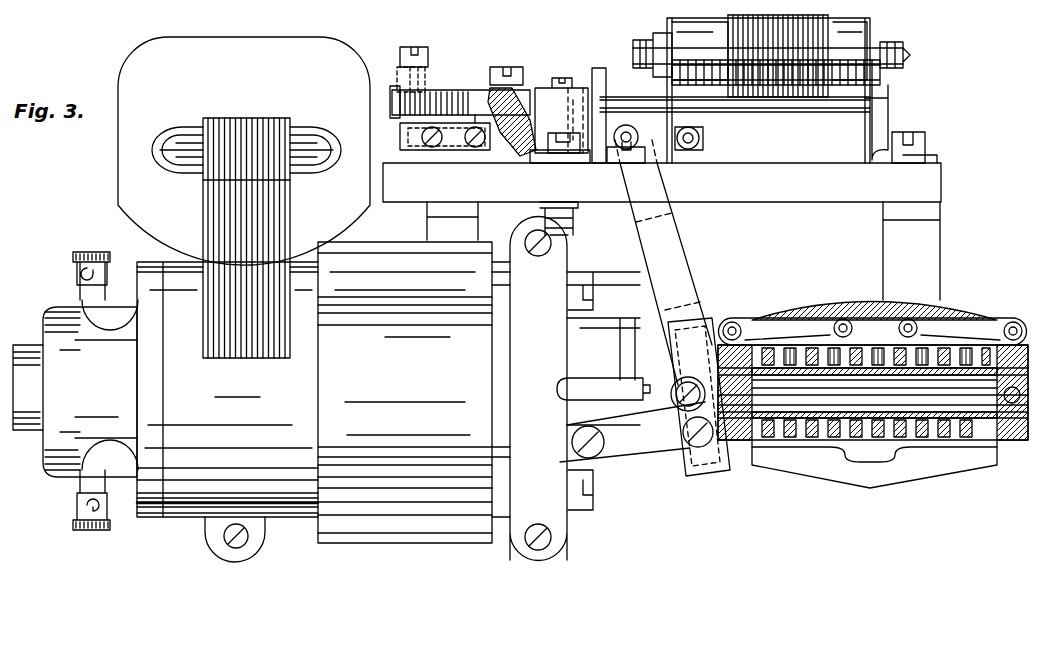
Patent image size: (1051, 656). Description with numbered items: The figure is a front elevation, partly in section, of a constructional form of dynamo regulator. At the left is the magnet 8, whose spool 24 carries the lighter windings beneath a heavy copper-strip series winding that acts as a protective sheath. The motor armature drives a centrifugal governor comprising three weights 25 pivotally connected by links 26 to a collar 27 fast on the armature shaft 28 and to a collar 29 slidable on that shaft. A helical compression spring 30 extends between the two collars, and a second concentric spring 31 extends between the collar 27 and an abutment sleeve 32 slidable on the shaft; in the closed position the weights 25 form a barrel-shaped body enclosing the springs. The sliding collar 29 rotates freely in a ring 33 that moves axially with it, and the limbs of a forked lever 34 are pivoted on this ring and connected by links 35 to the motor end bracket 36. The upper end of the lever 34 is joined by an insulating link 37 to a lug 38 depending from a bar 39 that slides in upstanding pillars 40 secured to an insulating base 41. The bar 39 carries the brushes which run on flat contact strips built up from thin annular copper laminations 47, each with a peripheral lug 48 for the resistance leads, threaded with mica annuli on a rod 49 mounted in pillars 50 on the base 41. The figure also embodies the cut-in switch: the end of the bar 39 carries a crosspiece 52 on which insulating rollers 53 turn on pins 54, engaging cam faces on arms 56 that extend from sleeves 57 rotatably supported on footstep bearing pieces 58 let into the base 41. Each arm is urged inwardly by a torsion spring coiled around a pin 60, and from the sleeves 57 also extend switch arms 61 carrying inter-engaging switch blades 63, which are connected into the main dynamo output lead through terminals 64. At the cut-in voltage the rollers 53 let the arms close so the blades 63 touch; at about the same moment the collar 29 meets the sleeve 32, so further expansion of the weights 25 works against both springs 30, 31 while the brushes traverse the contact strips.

The magnet 8 is at (274, 117).
The spool 24 is at (150, 60).
The governor weights 25 is at (860, 300).
The links 26 is at (790, 322).
The collar 27 is at (1005, 372).
The armature shaft 28 is at (876, 374).
The sliding collar 29 is at (735, 470).
The helical compression spring 30 is at (920, 455).
The second spring 31 is at (845, 368).
The abutment sleeve 32 is at (805, 440).
The ring 33 is at (686, 450).
The forked lever 34 is at (665, 263).
The links 35 is at (655, 452).
The motor end bracket 36 is at (580, 388).
The insulating link 37 is at (637, 152).
The lug 38 is at (700, 131).
The sliding bar 39 is at (735, 90).
The pillar 40 is at (622, 58).
The insulating base 41 is at (930, 188).
The copper laminations 47 is at (808, 90).
The peripheral lug 48 is at (885, 73).
The rod 49 is at (905, 55).
The pillars 50 is at (672, 128).
The crosspiece 52 is at (430, 64).
The rollers 53 is at (428, 88).
The pins 54 is at (390, 107).
The arms 56 is at (467, 98).
The sleeves 57 is at (575, 98).
The footstep bearing pieces 58 is at (565, 160).
The pin 60 is at (561, 103).
The switch arms 61 is at (490, 145).
The switch blades 63 is at (452, 150).
The terminals 64 is at (563, 148).